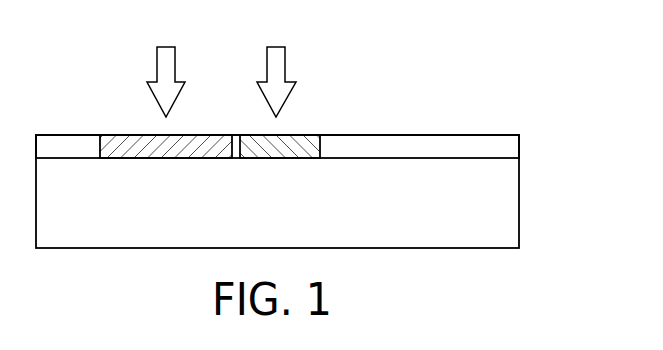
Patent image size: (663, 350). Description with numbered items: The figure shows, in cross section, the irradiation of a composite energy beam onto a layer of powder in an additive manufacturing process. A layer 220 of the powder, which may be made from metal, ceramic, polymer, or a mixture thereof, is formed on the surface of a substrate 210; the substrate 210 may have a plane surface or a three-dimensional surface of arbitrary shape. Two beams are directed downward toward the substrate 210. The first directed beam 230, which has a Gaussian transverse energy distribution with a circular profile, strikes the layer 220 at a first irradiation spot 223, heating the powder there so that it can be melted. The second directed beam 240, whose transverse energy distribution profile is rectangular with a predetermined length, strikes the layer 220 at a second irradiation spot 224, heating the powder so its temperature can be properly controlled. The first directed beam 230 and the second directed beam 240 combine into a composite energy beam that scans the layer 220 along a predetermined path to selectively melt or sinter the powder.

The substrate 210 is at (505, 199).
The layer of the powder 220 is at (505, 146).
The second irradiation spot 224 is at (140, 146).
The first irradiation spot 223 is at (293, 148).
The second directed beam 240 is at (167, 64).
The first directed beam 230 is at (277, 64).